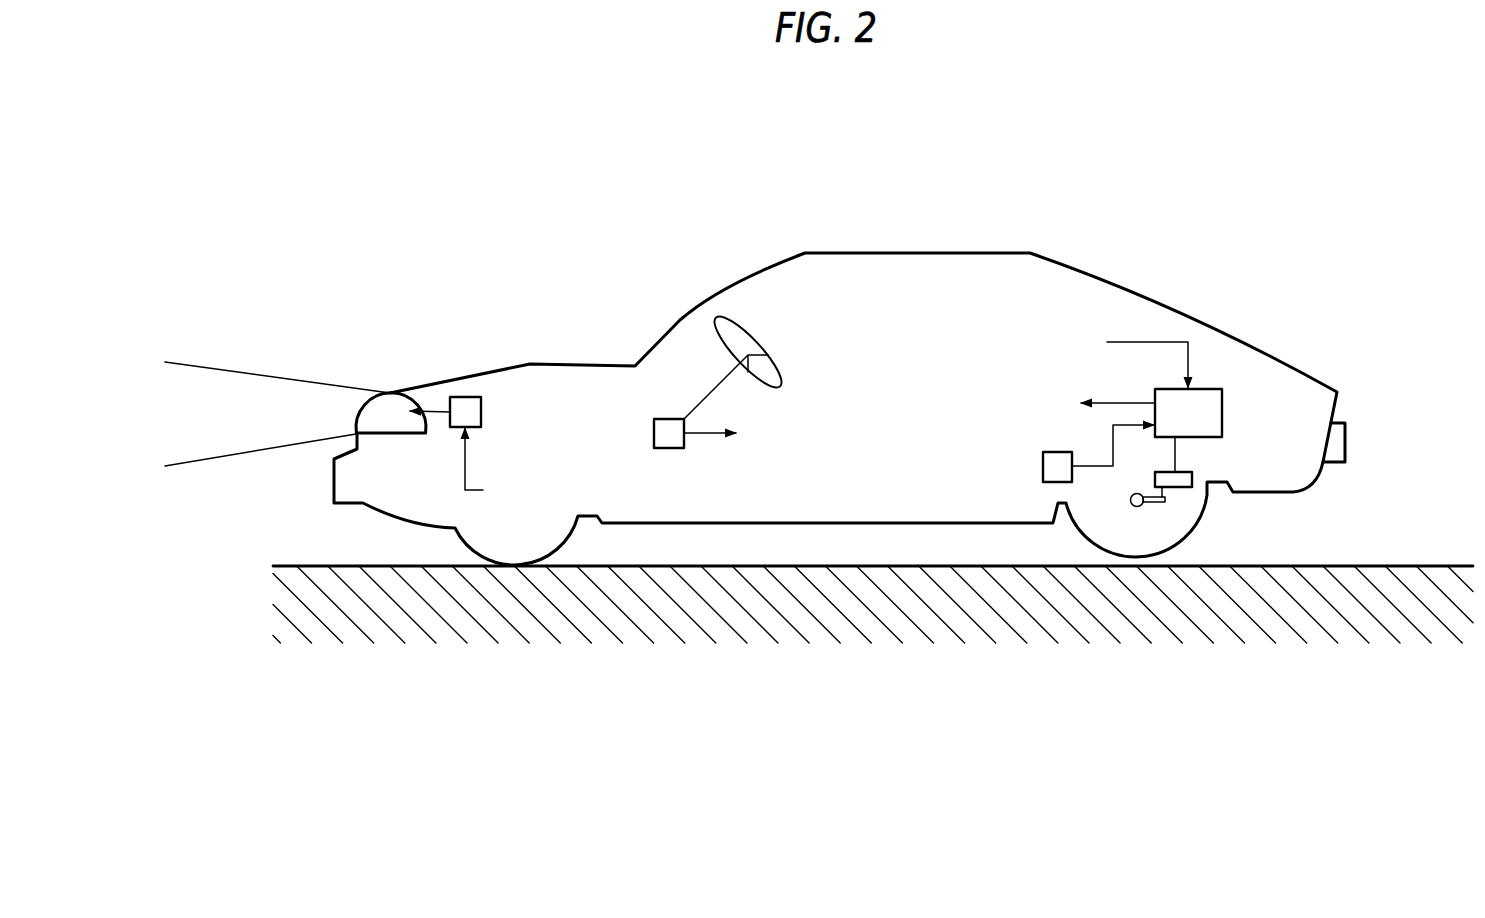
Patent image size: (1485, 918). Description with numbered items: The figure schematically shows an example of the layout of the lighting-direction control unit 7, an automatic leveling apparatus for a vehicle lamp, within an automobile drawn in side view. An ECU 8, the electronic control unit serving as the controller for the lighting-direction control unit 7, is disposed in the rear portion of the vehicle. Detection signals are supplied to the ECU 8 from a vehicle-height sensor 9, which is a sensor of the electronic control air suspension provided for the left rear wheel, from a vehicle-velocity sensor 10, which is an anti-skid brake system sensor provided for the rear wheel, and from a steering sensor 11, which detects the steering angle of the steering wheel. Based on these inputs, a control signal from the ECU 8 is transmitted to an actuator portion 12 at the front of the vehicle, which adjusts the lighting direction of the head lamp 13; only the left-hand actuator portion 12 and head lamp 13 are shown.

The lighting-direction control unit 7 is at (1262, 205).
The ECU 8 is at (1223, 413).
The vehicle-height sensor 9 is at (1192, 473).
The vehicle-velocity sensor 10 is at (1043, 466).
The steering sensor 11 is at (654, 432).
The actuator portion 12 is at (482, 412).
The head lamp 13 is at (392, 408).